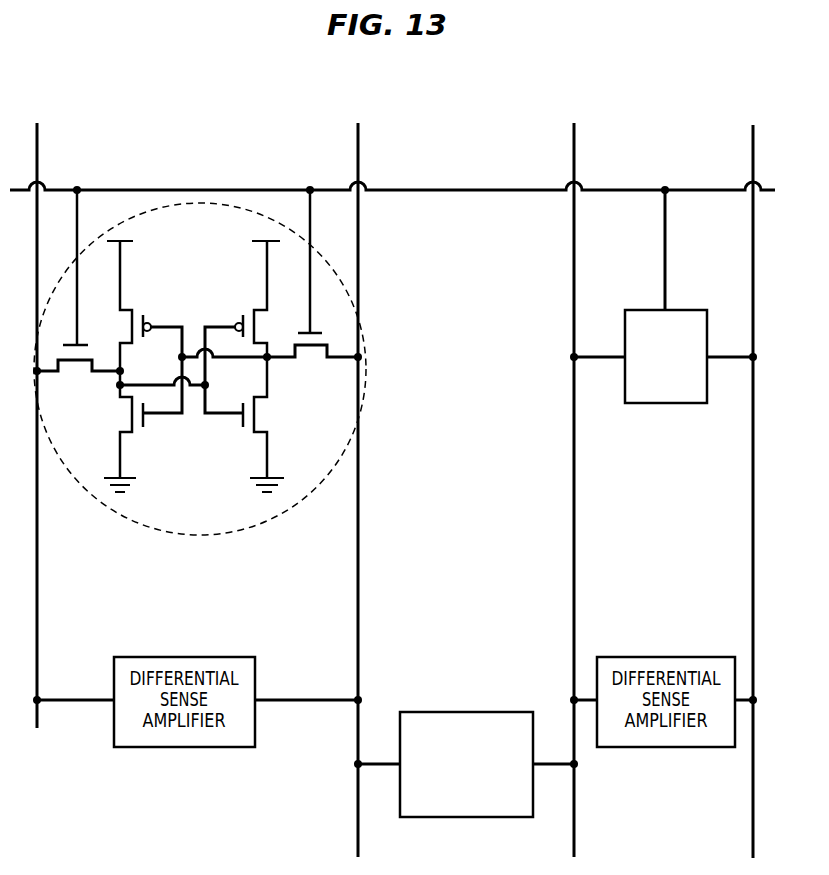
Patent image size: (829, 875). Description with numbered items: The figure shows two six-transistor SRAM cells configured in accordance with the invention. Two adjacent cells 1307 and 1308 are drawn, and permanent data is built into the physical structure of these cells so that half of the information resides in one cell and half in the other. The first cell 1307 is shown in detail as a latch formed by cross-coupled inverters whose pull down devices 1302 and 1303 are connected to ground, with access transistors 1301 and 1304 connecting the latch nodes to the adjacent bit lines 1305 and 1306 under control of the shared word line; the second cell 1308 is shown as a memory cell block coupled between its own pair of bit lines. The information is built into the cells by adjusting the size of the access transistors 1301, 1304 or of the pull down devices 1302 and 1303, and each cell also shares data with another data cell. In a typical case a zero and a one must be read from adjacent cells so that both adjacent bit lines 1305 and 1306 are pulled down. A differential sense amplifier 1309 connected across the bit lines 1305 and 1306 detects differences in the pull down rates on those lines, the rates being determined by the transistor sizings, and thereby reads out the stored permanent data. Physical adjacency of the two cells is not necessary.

The access transistor 1301 is at (75, 366).
The pull down device 1302 is at (128, 416).
The pull down device 1303 is at (266, 420).
The access transistor 1304 is at (310, 350).
The bit line 1305 is at (353, 135).
The bit line 1306 is at (570, 135).
The SRAM cell 1307 is at (160, 532).
The SRAM cell 1308 is at (657, 404).
The differential sense amplifier 1309 is at (466, 764).